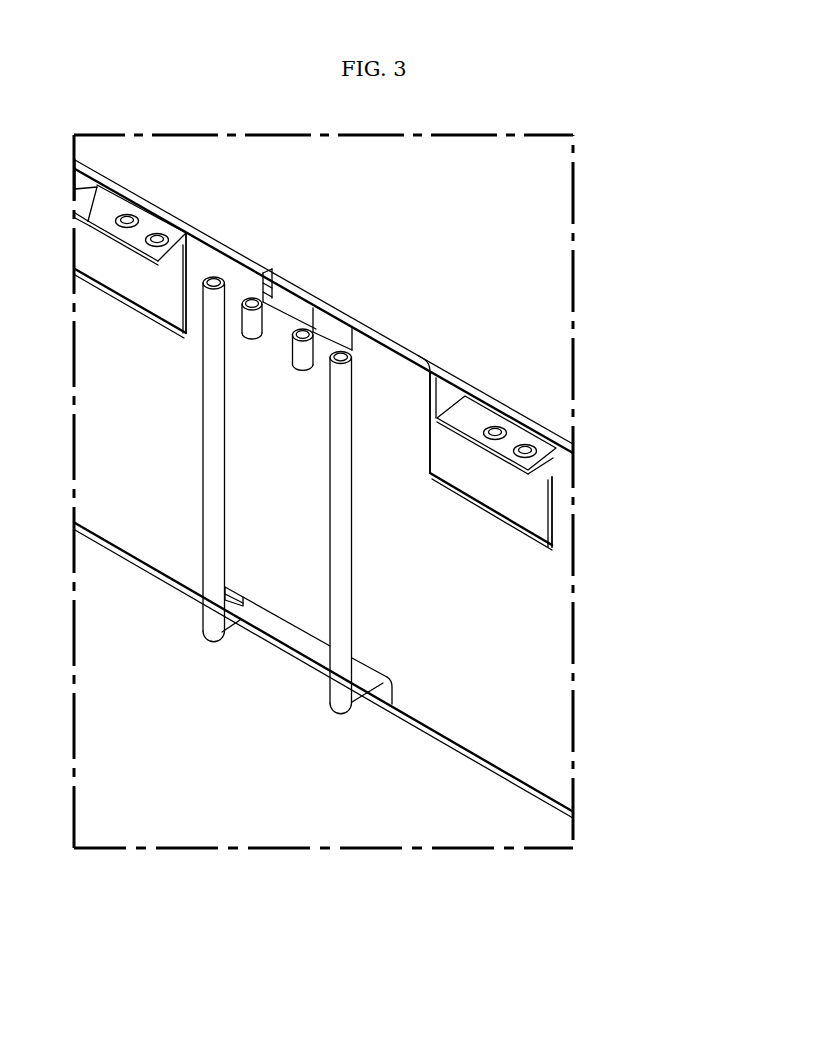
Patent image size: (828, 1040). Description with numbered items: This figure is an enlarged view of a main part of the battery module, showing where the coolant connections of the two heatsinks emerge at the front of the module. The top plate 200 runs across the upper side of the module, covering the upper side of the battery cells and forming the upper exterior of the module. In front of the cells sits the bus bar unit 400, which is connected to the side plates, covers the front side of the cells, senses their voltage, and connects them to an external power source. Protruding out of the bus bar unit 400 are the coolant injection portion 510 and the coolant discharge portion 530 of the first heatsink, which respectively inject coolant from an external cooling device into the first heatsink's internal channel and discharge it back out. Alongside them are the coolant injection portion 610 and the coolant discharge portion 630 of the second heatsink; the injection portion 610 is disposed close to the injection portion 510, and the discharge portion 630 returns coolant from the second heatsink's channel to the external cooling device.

The top plate 200 is at (557, 339).
The bus bar unit 400 is at (373, 526).
The coolant injection portion 510 is at (340, 330).
The coolant discharge portion 530 is at (292, 300).
The coolant injection portion 610 is at (333, 694).
The coolant discharge portion 630 is at (205, 618).